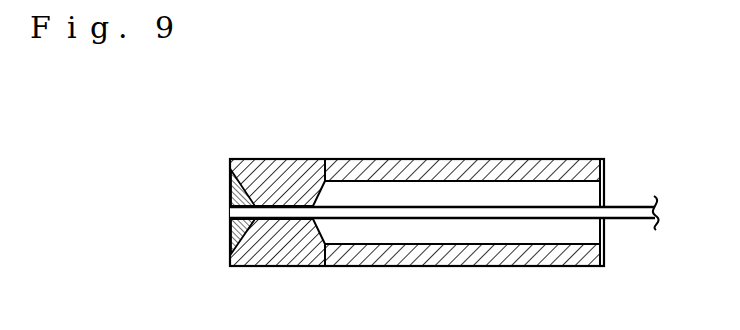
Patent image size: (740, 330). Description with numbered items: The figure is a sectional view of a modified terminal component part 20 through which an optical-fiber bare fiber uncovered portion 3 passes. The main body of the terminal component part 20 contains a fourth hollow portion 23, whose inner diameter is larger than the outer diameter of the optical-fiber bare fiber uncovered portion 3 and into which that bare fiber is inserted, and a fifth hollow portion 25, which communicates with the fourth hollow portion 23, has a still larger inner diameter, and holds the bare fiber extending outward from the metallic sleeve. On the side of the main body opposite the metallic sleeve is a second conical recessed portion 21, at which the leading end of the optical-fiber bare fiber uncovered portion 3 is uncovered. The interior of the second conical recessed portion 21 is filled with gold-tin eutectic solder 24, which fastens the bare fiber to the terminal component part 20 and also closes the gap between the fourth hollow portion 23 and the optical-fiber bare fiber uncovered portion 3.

The terminal component part 20 is at (481, 152).
The second conical recessed portion 21 is at (248, 168).
The fourth hollow portion 23 is at (296, 168).
The solder 24 is at (230, 243).
The fifth hollow portion 25 is at (561, 193).
The optical-fiber bare fiber uncovered portion 3 is at (643, 200).